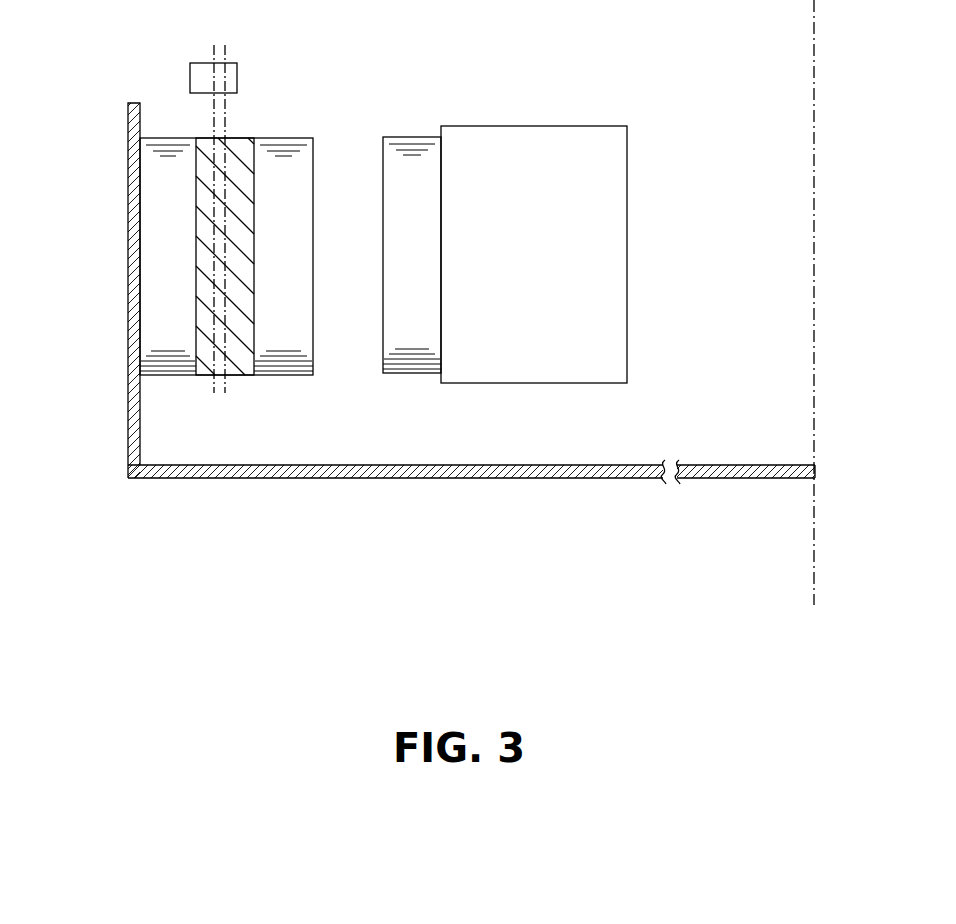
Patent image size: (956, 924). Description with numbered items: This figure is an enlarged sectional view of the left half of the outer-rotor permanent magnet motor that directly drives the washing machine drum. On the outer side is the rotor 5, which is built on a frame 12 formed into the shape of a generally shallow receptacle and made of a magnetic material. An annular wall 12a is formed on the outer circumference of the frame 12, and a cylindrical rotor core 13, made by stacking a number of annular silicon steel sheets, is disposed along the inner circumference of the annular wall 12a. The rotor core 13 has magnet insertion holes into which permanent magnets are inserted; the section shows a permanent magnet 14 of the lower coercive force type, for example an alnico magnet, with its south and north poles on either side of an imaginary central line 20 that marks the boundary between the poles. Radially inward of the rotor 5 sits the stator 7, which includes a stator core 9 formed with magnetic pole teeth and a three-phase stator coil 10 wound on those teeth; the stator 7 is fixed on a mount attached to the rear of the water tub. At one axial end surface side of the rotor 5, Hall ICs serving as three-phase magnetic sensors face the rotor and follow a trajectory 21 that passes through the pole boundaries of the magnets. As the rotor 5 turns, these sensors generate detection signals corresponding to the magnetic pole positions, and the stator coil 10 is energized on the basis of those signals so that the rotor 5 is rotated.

The rotor 5 is at (297, 385).
The stator 7 is at (543, 105).
The stator core 9 is at (413, 378).
The stator coil 10 is at (628, 228).
The frame 12 is at (435, 480).
The annular wall 12a is at (128, 222).
The rotor core 13 is at (311, 138).
The permanent magnet 14 is at (203, 264).
The central line 20 is at (226, 118).
The trajectory 21 is at (259, 76).